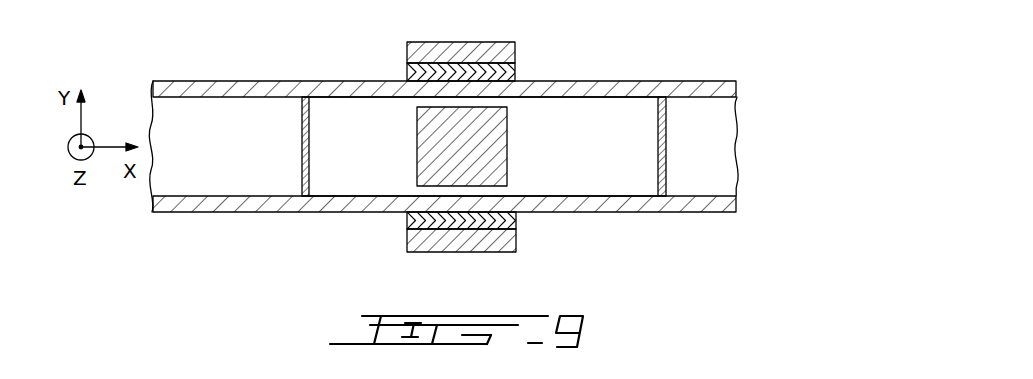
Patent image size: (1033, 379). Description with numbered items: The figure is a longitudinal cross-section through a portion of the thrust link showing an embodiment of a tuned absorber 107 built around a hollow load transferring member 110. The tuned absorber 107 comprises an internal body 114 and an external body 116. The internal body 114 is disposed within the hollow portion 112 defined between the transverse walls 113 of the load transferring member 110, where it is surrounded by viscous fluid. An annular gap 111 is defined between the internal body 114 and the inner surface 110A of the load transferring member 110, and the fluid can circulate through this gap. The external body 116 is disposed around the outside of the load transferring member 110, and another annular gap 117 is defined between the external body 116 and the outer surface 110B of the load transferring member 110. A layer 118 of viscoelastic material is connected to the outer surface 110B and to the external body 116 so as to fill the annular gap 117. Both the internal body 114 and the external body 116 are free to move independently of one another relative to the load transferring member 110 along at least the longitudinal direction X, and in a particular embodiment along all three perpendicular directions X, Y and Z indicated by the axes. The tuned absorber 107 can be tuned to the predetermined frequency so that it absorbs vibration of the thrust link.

The tuned absorber 107 is at (378, 238).
The load transferring member 110 is at (493, 138).
The inner surface of the load transferring member 110A is at (712, 98).
The outer surface of the load transferring member 110B is at (700, 213).
The annular gap 111 is at (397, 113).
The hollow portion 112 is at (627, 188).
The transverse walls 113 is at (302, 146).
The internal body 114 is at (508, 150).
The external body 116 is at (515, 52).
The annular gap 117 is at (460, 43).
The layer of viscoelastic material 118 is at (515, 70).